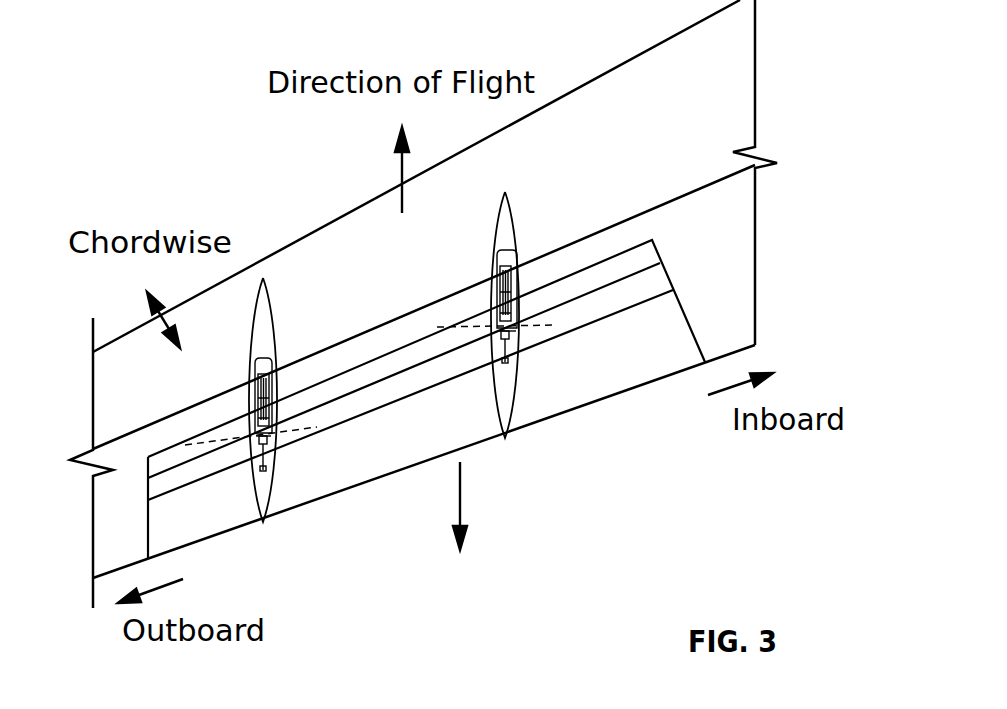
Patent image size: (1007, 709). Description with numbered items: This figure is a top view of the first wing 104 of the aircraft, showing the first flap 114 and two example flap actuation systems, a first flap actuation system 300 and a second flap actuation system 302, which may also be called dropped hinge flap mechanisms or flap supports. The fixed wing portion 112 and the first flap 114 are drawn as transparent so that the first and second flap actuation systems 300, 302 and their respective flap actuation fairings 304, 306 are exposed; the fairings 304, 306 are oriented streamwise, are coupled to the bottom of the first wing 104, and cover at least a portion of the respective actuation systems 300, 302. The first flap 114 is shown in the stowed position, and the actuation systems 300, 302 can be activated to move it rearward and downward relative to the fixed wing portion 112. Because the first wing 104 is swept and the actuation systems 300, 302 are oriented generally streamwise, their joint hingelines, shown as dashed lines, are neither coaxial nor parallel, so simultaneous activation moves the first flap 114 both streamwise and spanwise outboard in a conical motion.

The first wing 104 is at (640, 70).
The fixed wing portion 112 is at (330, 243).
The first flap 114 is at (367, 463).
The first flap actuation system 300 is at (503, 272).
The second flap actuation system 302 is at (263, 387).
The flap actuation fairing 304 is at (518, 224).
The flap actuation fairing 306 is at (277, 327).